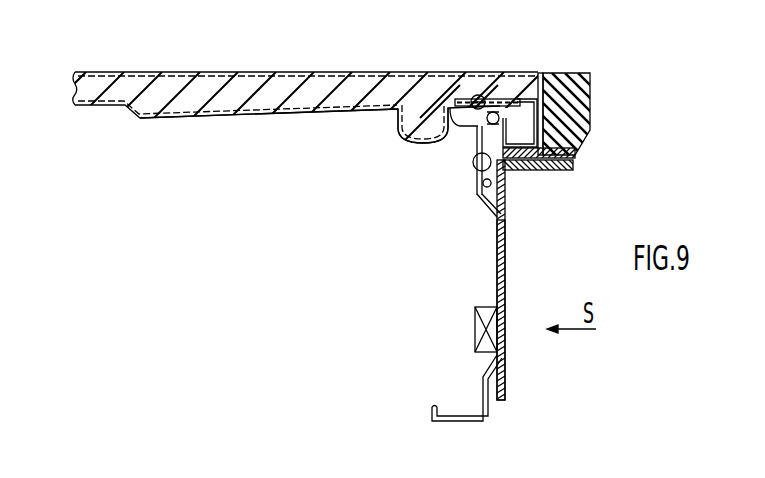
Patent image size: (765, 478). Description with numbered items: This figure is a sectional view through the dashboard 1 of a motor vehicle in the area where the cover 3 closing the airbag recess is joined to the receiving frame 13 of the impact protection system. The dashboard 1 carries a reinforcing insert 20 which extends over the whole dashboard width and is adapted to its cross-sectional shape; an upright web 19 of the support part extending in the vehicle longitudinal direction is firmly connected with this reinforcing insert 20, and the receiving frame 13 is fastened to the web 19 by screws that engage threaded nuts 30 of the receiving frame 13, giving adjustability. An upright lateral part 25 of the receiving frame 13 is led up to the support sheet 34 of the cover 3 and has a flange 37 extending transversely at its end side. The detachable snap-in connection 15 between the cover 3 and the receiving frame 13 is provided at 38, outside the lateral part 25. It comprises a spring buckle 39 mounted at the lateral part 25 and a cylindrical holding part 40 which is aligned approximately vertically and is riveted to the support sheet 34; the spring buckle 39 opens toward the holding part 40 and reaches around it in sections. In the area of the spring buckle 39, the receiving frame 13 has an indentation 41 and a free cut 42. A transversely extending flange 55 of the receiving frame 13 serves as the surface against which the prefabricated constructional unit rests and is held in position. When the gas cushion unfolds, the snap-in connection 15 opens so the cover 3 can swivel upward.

The dashboard 1 is at (588, 70).
The cover 3 is at (238, 72).
The receiving frame 13 is at (497, 268).
The snap-in connection 15 is at (527, 75).
The web 19 is at (508, 200).
The reinforcing insert 20 is at (576, 148).
The lateral part 25 is at (495, 216).
The threaded nut 30 is at (475, 318).
The support sheet 34 is at (212, 120).
The flange 37 is at (580, 112).
The snap-in connection location 38 is at (480, 119).
The spring buckle 39 is at (507, 172).
The cylindrical holding part 40 is at (463, 95).
The indentation 41 is at (474, 191).
The free cut 42 is at (492, 80).
The flange 55 is at (448, 415).